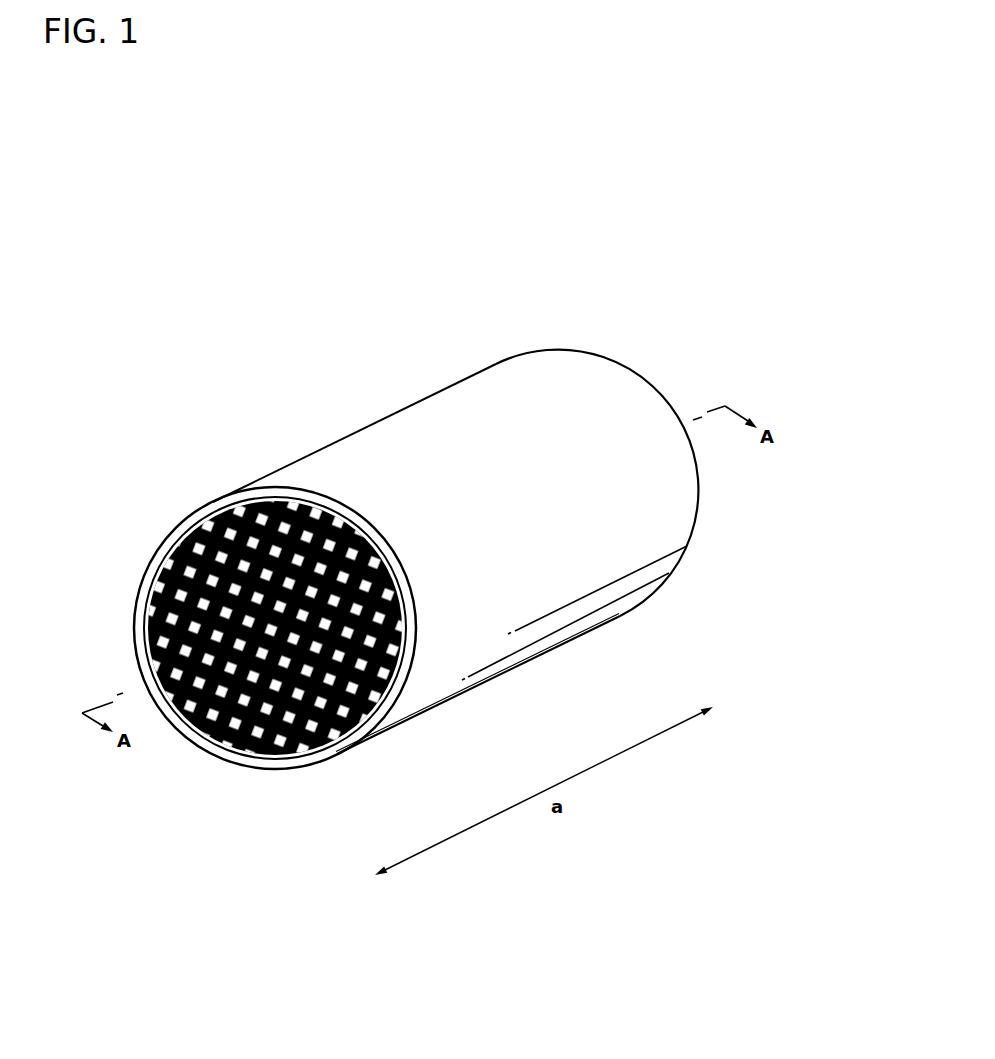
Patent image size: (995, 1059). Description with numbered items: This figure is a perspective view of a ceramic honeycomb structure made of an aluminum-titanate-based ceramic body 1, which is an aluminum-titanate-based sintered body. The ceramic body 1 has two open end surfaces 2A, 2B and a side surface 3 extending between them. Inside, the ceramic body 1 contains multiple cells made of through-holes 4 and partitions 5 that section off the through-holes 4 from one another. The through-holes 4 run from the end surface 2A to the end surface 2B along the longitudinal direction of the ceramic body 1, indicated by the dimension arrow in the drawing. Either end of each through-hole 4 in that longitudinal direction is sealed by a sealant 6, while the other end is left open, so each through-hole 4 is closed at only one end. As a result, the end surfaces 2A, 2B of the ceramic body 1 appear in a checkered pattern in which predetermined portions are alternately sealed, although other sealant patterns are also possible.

The ceramic body 1 is at (536, 297).
The end surface 2A is at (136, 549).
The end surface 2B is at (665, 366).
The side surface 3 is at (531, 633).
The through-holes 4 is at (264, 748).
The partitions 5 is at (217, 713).
The sealant 6 is at (351, 725).